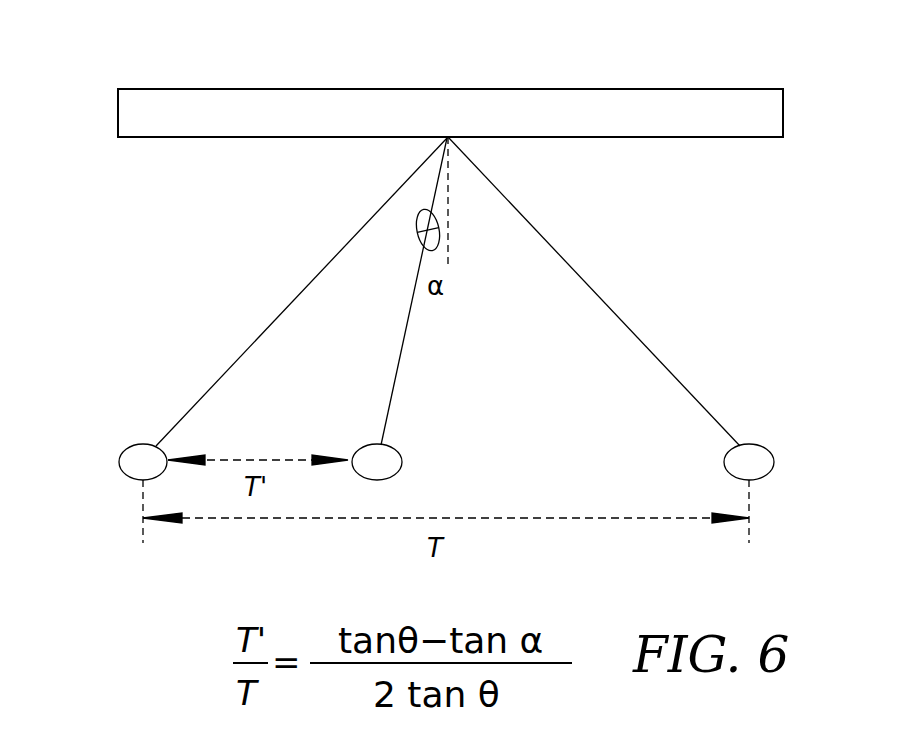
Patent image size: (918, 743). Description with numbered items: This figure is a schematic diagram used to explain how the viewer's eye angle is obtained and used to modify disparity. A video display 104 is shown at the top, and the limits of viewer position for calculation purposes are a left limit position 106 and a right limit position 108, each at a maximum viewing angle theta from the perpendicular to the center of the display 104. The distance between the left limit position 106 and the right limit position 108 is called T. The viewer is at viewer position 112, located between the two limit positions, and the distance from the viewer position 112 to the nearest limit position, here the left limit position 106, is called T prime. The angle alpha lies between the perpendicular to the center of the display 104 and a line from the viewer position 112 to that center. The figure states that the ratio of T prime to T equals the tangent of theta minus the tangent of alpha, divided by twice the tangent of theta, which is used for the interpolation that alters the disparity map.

The video display 104 is at (213, 88).
The left limit position 106 is at (136, 444).
The right limit position 108 is at (755, 444).
The viewer position 112 is at (367, 444).